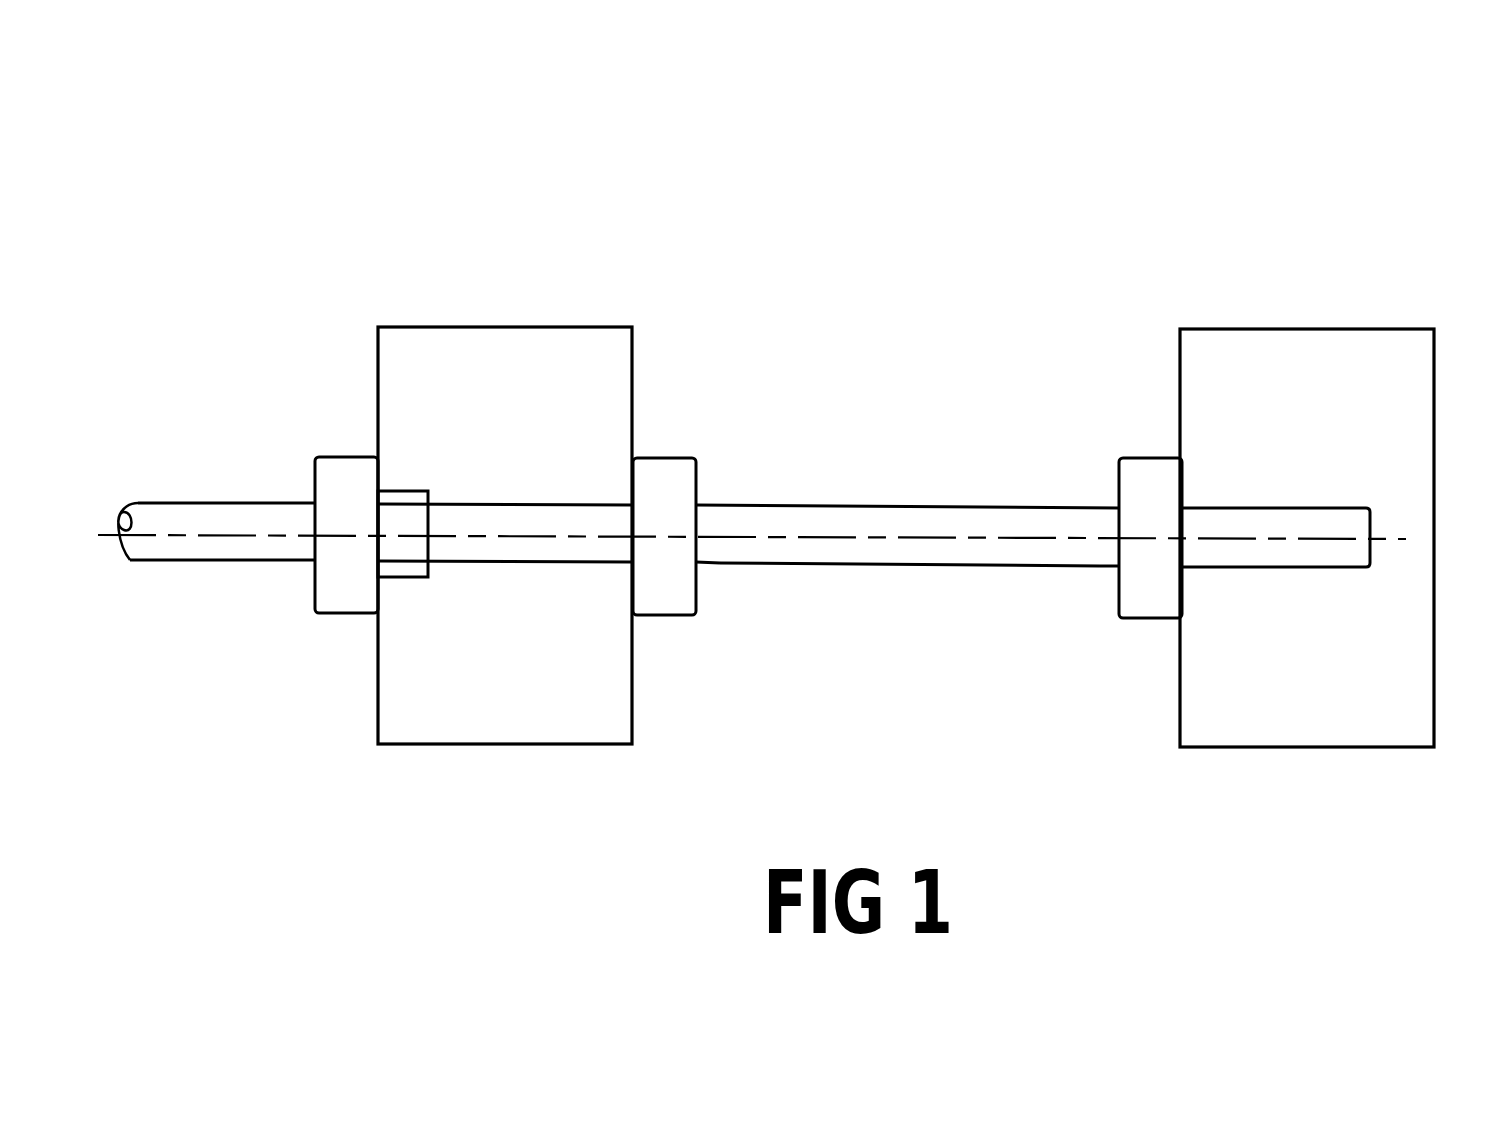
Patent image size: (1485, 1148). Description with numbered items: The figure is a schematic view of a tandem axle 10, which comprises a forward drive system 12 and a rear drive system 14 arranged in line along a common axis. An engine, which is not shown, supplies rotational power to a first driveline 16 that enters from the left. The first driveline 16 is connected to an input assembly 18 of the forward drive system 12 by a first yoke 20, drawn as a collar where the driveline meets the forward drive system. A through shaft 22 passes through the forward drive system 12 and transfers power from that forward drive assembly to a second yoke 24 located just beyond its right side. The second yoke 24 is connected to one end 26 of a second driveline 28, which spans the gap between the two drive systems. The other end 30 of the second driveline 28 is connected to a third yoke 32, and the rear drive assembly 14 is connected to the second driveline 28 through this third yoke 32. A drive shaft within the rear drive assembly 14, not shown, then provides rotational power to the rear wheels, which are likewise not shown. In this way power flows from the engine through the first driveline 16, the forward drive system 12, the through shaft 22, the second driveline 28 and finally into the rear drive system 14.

The tandem axle 10 is at (752, 300).
The forward drive system 12 is at (517, 445).
The rear drive system 14 is at (1327, 447).
The first driveline 16 is at (180, 518).
The input assembly 18 is at (430, 497).
The first yoke 20 is at (343, 580).
The through shaft 22 is at (497, 522).
The second yoke 24 is at (670, 483).
The one end of second driveline 26 is at (697, 563).
The second driveline 28 is at (820, 520).
The other end of second driveline 30 is at (1117, 566).
The third yoke 32 is at (1149, 491).